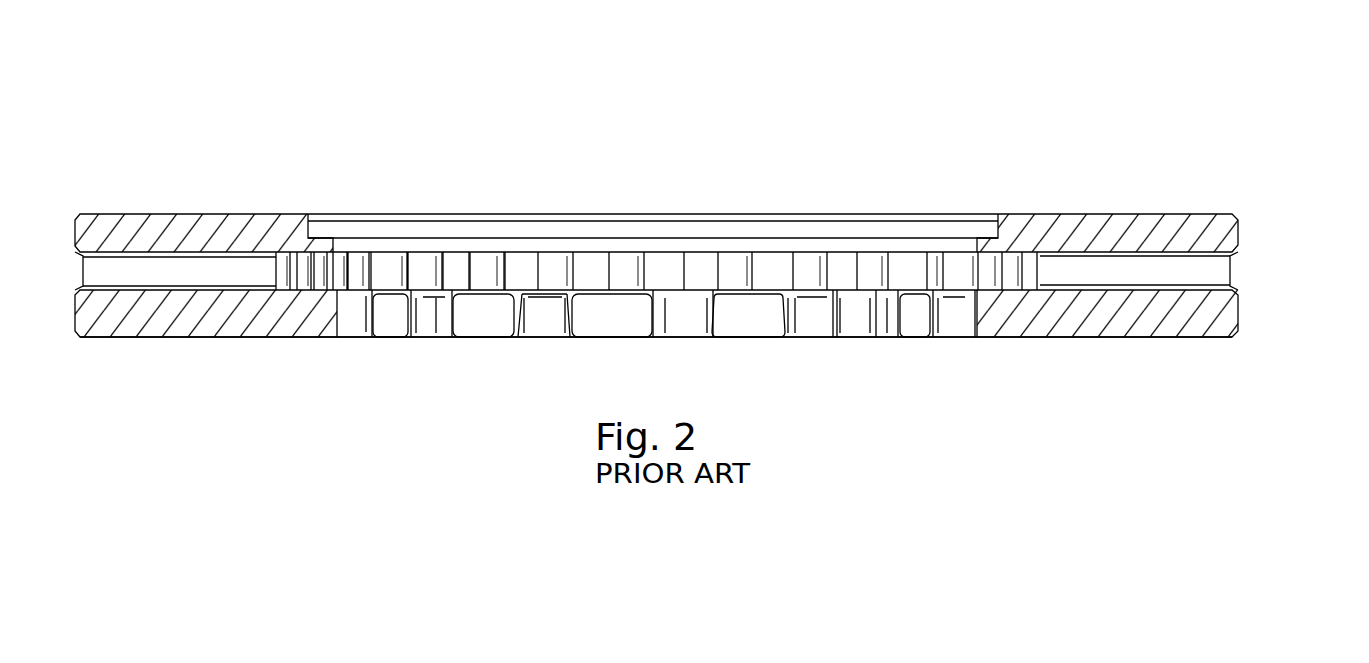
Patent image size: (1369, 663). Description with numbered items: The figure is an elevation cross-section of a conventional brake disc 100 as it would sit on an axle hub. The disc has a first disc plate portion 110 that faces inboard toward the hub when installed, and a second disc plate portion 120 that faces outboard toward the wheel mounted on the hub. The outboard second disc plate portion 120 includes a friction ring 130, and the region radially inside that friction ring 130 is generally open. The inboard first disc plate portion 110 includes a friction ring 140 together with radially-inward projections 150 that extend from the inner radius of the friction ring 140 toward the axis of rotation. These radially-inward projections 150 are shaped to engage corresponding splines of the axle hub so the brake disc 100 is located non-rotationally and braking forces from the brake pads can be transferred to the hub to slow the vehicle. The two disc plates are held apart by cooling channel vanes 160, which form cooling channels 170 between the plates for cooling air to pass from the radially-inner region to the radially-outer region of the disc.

The brake disc 100 is at (701, 77).
The first disc plate portion 110 is at (1242, 313).
The second disc plate portion 120 is at (1242, 228).
The friction ring 130 is at (1080, 212).
The friction ring 140 is at (1095, 338).
The radially-inward projections 150 is at (610, 332).
The cooling channel vanes 160 is at (1043, 268).
The cooling channels 170 is at (768, 268).